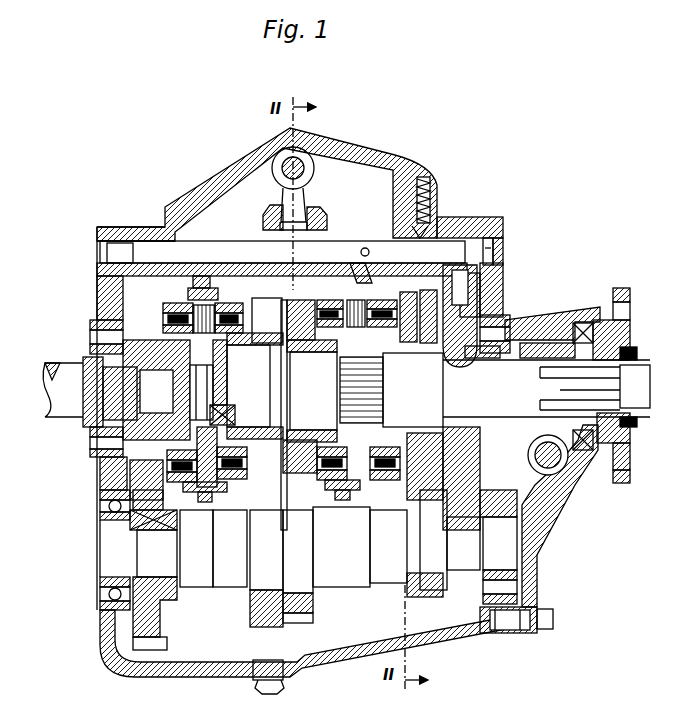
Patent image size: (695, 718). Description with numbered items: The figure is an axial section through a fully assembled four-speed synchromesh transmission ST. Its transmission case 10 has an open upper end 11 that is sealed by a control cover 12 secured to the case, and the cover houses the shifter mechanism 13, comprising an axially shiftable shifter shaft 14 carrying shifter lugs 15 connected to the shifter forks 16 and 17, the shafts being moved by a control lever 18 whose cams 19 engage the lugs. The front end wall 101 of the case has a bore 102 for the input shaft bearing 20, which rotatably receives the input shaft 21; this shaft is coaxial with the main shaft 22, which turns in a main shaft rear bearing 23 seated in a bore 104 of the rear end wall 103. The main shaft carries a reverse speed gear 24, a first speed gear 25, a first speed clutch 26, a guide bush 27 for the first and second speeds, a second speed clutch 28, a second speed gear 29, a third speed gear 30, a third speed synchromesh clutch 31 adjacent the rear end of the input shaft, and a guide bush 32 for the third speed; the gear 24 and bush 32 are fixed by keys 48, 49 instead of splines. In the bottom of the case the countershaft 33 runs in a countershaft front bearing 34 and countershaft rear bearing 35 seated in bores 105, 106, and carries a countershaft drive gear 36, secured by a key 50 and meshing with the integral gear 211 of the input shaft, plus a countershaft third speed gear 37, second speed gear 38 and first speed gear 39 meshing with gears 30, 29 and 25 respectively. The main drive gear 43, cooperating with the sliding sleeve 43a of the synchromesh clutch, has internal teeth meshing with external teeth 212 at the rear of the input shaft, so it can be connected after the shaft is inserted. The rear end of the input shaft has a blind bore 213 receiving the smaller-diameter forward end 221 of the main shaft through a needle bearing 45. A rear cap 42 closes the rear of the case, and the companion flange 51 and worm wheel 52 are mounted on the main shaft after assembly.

The transmission case 10 is at (438, 640).
The open upper end 11 is at (97, 255).
The control cover 12 is at (421, 168).
The shifter mechanism 13 is at (352, 196).
The shifter shaft 14 is at (455, 243).
The shifter lugs 15 is at (268, 213).
The shifter fork 16 is at (365, 278).
The shifter fork 17 is at (198, 278).
The control lever 18 is at (308, 170).
The cams 19 is at (285, 233).
The input shaft bearing 20 is at (90, 330).
The input shaft 21 is at (68, 412).
The main shaft 22 is at (515, 405).
The main shaft rear bearing 23 is at (525, 325).
The reverse speed gear 24 is at (462, 367).
The first speed gear 25 is at (432, 343).
The first speed clutch 26 is at (405, 343).
The guide bush for the first and second speeds 27 is at (337, 348).
The second speed clutch 28 is at (340, 318).
The second speed gear 29 is at (333, 291).
The third speed gear 30 is at (265, 325).
The third speed synchromesh clutch 31 is at (230, 310).
The guide bush for the third speed 32 is at (228, 355).
The countershaft 33 is at (352, 559).
The countershaft front bearing 34 is at (100, 516).
The countershaft rear bearing 35 is at (517, 578).
The countershaft drive gear 36 is at (160, 642).
The countershaft third speed gear 37 is at (258, 641).
The countershaft second speed gear 38 is at (300, 613).
The countershaft first speed gear 39 is at (430, 590).
The rear cap 42 is at (586, 320).
The main drive gear 43 is at (185, 505).
The sliding sleeve 43a is at (232, 492).
The roller or needle bearing 45 is at (203, 392).
The key 48 is at (480, 360).
The key 49 is at (225, 422).
The key 50 is at (130, 528).
The companion flange 51 is at (630, 455).
The worm wheel 52 is at (578, 464).
The front end wall 101 is at (108, 478).
The bore 102 is at (97, 305).
The rear end wall 103 is at (516, 465).
The bore 104 is at (505, 300).
The bore 105 is at (110, 612).
The bore 106 is at (502, 634).
The integral toothed portion or gear 211 is at (175, 335).
The external axially parallel teeth 212 is at (180, 318).
The blind bore 213 is at (103, 386).
The forward end of the main shaft 221 is at (172, 402).
The synchromesh transmission ST is at (574, 184).